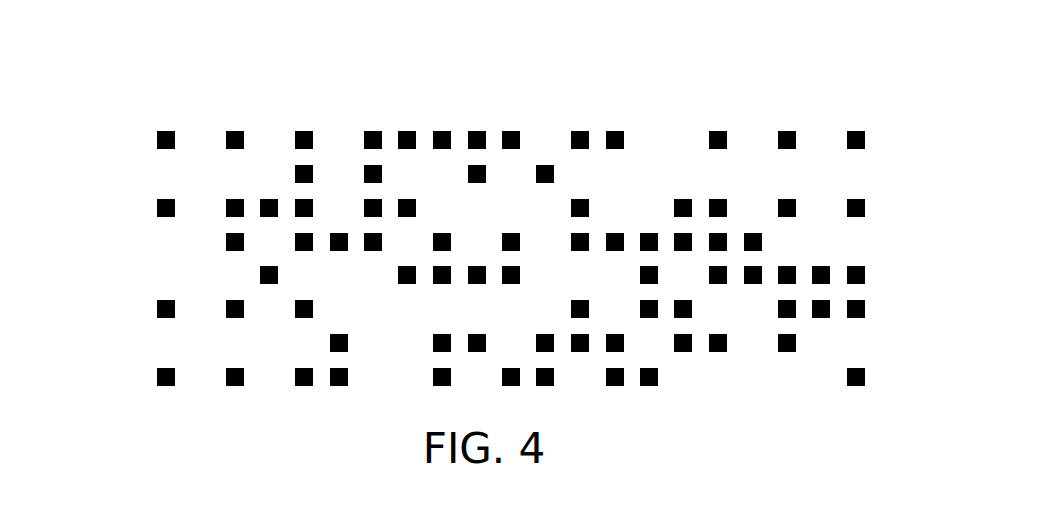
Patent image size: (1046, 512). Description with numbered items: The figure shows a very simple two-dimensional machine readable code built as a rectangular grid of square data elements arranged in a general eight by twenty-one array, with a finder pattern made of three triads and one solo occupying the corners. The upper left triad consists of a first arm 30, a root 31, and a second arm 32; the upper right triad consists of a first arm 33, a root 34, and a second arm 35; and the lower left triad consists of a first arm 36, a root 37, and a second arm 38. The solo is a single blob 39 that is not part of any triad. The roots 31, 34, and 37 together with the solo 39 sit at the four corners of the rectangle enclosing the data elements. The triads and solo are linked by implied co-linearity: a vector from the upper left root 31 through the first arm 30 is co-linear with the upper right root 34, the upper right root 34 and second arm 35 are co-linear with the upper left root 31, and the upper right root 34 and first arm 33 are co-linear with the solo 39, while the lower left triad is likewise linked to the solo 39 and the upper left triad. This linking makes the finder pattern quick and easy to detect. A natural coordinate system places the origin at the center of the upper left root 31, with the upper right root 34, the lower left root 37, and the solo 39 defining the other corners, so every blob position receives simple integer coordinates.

The first arm 30 is at (244, 140).
The root 31 is at (157, 140).
The second arm 32 is at (157, 208).
The first arm 33 is at (865, 208).
The root 34 is at (865, 140).
The second arm 35 is at (778, 140).
The first arm 36 is at (157, 309).
The root 37 is at (167, 386).
The second arm 38 is at (235, 386).
The blob 39 is at (865, 377).